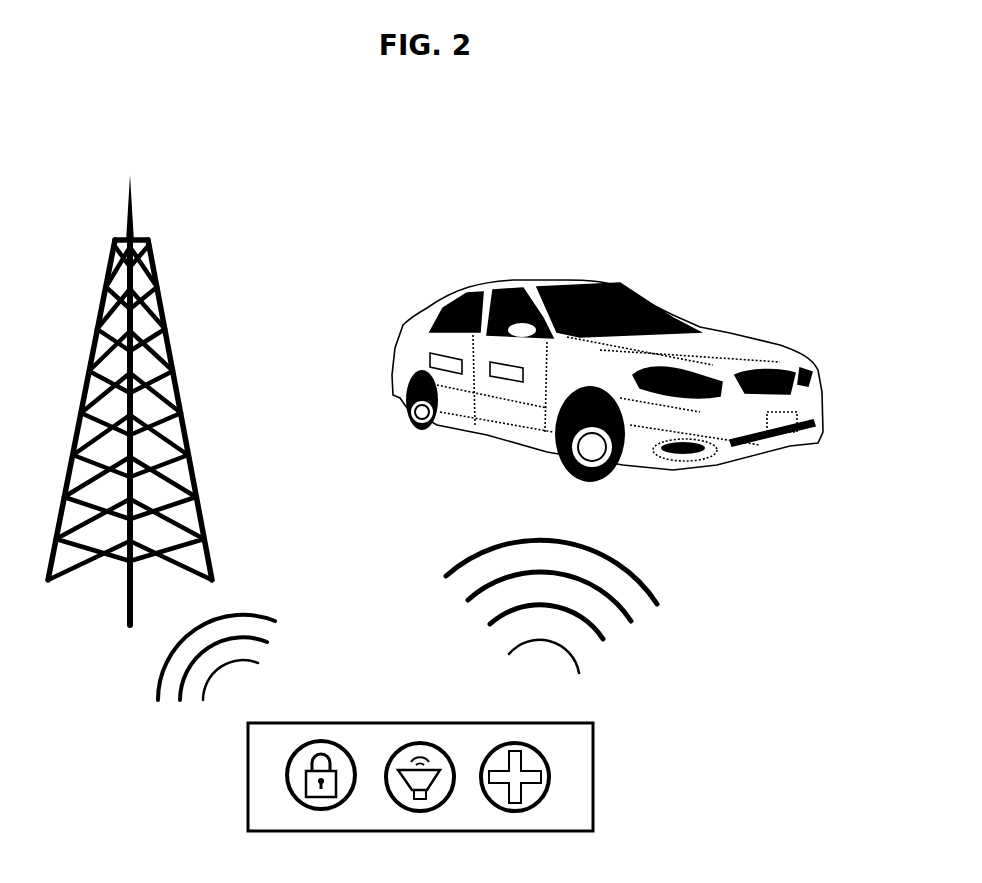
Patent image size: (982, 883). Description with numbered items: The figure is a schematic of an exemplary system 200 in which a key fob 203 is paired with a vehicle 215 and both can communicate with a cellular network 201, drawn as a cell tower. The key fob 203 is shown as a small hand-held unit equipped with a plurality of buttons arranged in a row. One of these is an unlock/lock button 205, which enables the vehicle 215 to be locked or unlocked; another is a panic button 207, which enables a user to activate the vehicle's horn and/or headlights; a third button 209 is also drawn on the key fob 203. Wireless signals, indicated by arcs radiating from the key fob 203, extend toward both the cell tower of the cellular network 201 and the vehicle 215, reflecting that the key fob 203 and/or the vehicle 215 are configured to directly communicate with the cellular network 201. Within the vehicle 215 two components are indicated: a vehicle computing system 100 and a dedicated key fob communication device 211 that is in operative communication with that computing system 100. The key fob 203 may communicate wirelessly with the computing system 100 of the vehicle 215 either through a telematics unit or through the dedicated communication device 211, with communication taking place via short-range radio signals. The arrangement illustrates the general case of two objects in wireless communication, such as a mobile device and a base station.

The system 200 is at (740, 147).
The cellular network 201 is at (113, 240).
The vehicle 215 is at (622, 282).
The communication device 211 is at (457, 374).
The vehicle computing system 100 is at (523, 382).
The key fob 203 is at (594, 775).
The unlock/lock button 205 is at (288, 800).
The panic button 207 is at (420, 742).
The additional function button 209 is at (540, 798).